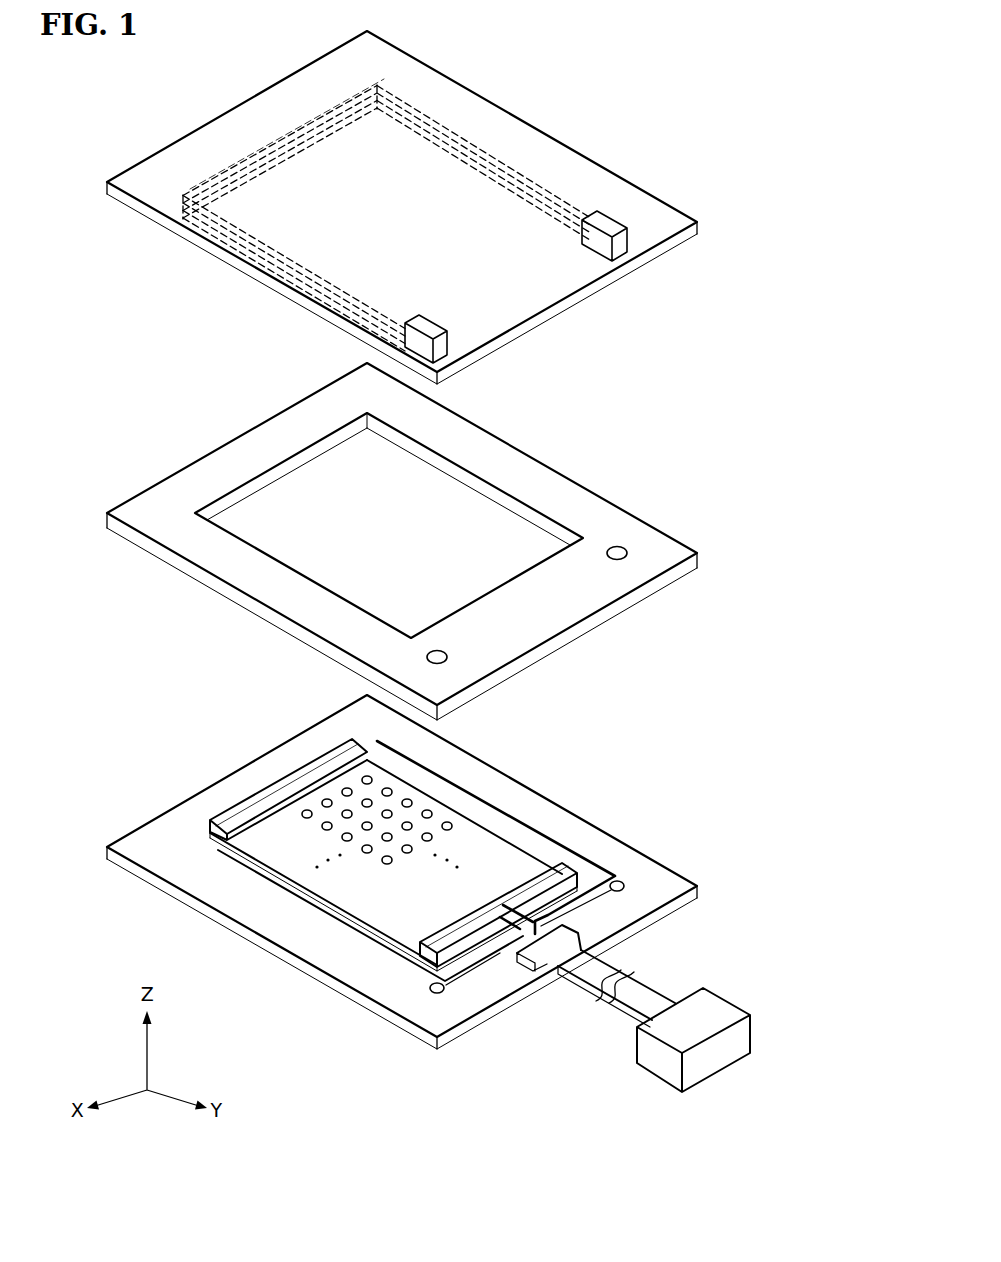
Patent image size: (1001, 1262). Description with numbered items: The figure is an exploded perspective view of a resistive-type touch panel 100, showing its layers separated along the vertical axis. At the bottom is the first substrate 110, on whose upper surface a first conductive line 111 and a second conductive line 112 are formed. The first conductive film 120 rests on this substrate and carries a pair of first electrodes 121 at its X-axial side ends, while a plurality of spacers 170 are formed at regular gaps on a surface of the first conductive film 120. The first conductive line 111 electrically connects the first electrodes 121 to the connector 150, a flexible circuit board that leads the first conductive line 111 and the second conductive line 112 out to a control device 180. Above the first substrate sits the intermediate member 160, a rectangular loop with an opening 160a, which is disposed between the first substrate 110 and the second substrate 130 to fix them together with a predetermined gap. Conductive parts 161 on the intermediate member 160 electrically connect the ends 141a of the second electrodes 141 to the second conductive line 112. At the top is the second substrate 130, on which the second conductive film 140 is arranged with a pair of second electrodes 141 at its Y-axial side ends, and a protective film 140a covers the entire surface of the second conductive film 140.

The touch panel 100 is at (649, 62).
The first substrate 110 is at (150, 874).
The first conductive line 111 is at (552, 836).
The second conductive line 112 is at (590, 905).
The first conductive film 120 is at (277, 873).
The first electrodes 121 is at (222, 836).
The second substrate 130 is at (548, 310).
The second conductive film 140 is at (275, 150).
The protective film 140a is at (227, 182).
The second electrodes 141 is at (468, 160).
The ends of the second electrodes 141a is at (618, 224).
The connector 150 is at (590, 975).
The intermediate member 160 is at (565, 640).
The opening 160a is at (257, 488).
The conductive parts 161 is at (623, 559).
The spacers 170 is at (365, 853).
The control device 180 is at (660, 1066).